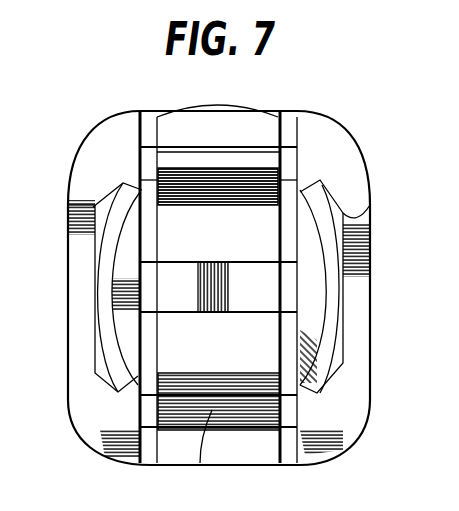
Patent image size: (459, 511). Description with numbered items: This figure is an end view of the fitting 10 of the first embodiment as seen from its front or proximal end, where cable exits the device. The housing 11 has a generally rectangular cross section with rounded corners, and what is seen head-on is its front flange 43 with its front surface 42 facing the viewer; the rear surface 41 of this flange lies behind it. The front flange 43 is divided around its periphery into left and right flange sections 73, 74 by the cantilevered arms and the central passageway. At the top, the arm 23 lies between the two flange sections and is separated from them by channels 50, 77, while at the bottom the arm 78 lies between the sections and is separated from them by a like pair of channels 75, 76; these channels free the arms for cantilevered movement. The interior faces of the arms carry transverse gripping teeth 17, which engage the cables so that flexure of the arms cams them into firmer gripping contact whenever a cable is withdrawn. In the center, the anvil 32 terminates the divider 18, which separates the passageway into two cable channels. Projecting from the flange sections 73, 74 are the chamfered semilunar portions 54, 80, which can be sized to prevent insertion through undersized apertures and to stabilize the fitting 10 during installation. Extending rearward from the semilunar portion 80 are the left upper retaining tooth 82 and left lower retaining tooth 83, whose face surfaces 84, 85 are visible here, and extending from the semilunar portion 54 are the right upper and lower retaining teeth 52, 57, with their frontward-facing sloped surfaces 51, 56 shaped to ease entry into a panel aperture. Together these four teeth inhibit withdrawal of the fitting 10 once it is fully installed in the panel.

The fitting 10 is at (72, 119).
The housing 11 is at (113, 455).
The gripping teeth 17 is at (196, 204).
The divider 18 is at (228, 300).
The cantilevered arm 23 is at (225, 158).
The anvil 32 is at (245, 261).
The rear surface of flange 41 is at (372, 270).
The front surface of flange 42 is at (335, 140).
The front flange 43 is at (368, 168).
The channel 50 is at (287, 115).
The sloped surface 51 is at (325, 192).
The right upper retaining tooth 52 is at (371, 206).
The semilunar portion 54 is at (298, 283).
The sloped surface 56 is at (305, 355).
The right lower retaining tooth 57 is at (318, 395).
The flange section 73 is at (333, 437).
The flange section 74 is at (108, 437).
The channel 75 is at (292, 452).
The channel 76 is at (150, 462).
The channel 77 is at (150, 113).
The cantilevered arm 78 is at (201, 466).
The semilunar portion 80 is at (143, 284).
The left upper retaining tooth 82 is at (125, 186).
The left lower retaining tooth 83 is at (120, 394).
The face surface 84 is at (116, 198).
The face surface 85 is at (142, 348).